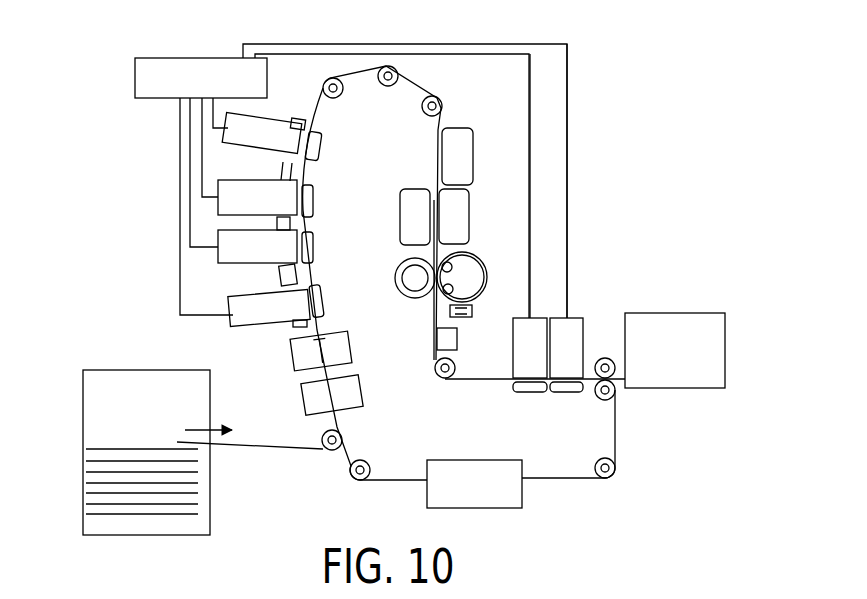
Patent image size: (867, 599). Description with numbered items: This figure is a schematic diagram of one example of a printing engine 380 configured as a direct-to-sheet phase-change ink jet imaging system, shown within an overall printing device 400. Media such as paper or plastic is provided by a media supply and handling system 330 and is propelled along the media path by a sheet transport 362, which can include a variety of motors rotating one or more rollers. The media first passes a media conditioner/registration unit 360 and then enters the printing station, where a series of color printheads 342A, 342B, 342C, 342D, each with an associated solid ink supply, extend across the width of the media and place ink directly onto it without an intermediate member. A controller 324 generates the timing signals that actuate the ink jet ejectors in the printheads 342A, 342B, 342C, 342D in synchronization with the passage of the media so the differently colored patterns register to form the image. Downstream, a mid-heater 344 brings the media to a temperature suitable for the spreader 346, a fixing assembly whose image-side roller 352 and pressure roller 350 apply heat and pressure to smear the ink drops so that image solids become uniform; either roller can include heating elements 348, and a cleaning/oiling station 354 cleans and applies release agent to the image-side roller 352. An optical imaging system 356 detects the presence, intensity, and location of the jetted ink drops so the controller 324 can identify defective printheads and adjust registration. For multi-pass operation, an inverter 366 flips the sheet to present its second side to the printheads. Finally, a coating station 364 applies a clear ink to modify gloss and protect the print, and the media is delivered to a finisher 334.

The controller 324 is at (190, 57).
The media supply and handling system 330 is at (113, 368).
The finisher 334 is at (670, 313).
The printhead 342A is at (232, 322).
The printhead 342B is at (218, 266).
The printhead 342C is at (218, 212).
The printhead 342D is at (222, 133).
The mid-heater 344 is at (400, 208).
The spreader 346 is at (493, 242).
The heating elements 348 is at (450, 290).
The pressure roller 350 is at (390, 295).
The image-side roller 352 is at (495, 289).
The cleaning/oiling station 354 is at (456, 318).
The optical imaging system 356 is at (437, 336).
The media conditioner/registration unit 360 is at (300, 393).
The sheet transport 362 is at (425, 370).
The coating station 364 is at (583, 310).
The inverter 366 is at (522, 490).
The printing engine 380 is at (142, 201).
The printing system 400 is at (42, 598).